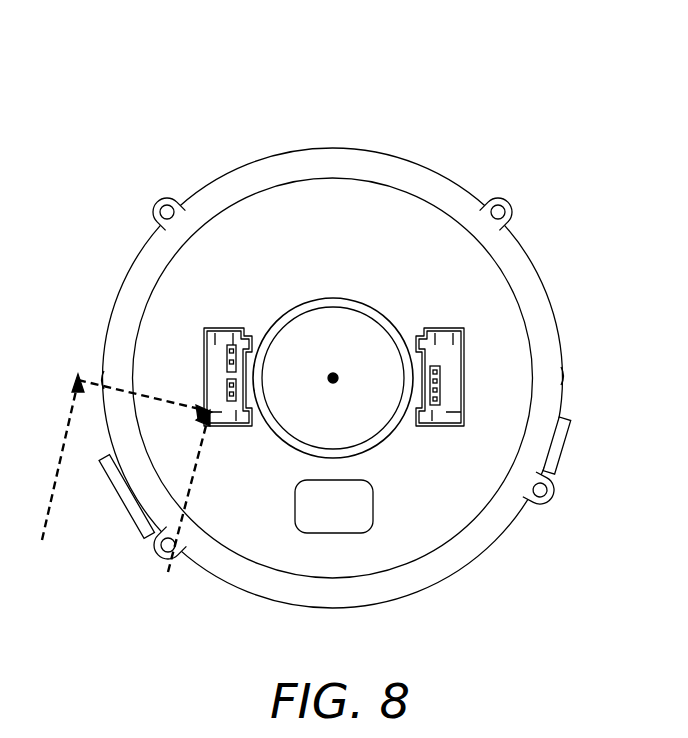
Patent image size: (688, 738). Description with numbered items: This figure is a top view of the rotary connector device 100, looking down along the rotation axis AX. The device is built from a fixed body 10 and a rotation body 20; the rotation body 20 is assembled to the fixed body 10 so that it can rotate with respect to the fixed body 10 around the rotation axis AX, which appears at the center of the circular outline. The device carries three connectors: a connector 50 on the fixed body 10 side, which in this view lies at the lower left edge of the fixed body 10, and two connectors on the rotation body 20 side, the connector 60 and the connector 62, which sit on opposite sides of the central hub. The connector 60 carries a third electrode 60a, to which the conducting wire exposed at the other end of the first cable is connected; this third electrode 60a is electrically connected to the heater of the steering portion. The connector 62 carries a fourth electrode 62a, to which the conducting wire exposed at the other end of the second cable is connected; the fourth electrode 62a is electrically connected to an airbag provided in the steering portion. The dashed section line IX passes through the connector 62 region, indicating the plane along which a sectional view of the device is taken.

The rotary connector device 100 is at (351, 332).
The fixed body 10 is at (347, 392).
The rotation body 20 is at (510, 373).
The connector 50 is at (143, 503).
The connector 60 is at (522, 320).
The third electrode 60a is at (433, 372).
The connector 62 is at (154, 258).
The fourth electrode 62a is at (227, 358).
The rotation axis AX is at (338, 377).
The section line IX- IX is at (119, 490).